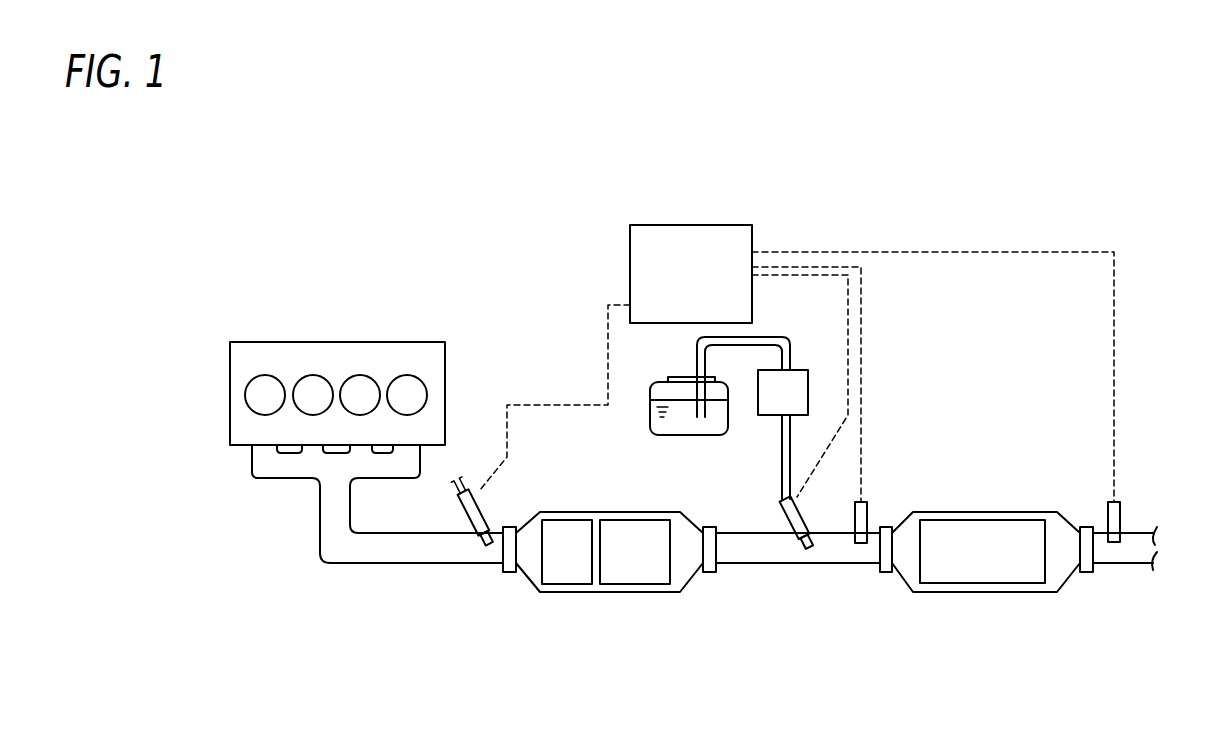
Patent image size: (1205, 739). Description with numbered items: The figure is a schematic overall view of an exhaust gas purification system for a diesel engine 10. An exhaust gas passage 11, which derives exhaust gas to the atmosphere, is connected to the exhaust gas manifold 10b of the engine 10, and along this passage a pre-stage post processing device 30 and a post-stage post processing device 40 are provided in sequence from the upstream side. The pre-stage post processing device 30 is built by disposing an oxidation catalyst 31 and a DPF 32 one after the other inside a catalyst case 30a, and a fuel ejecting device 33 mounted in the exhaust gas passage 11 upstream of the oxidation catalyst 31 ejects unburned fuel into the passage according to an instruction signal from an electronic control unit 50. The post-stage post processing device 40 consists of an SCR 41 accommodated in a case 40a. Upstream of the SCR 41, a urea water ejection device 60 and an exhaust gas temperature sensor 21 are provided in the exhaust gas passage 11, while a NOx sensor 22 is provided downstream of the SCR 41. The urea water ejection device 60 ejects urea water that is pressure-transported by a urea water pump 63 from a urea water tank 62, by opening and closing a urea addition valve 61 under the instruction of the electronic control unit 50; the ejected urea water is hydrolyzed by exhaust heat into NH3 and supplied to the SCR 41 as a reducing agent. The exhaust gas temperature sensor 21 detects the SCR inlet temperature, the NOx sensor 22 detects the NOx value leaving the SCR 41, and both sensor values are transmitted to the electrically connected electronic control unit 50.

The diesel engine 10 is at (336, 342).
The exhaust gas manifold 10b is at (285, 479).
The exhaust gas passage 11 is at (357, 565).
The fuel ejecting device 33 is at (478, 509).
The pre-stage post processing device 30 is at (609, 598).
The catalyst case 30a is at (590, 600).
The oxidation catalyst 31 is at (577, 562).
The DPF 32 is at (635, 552).
The exhaust gas temperature sensor 21 is at (856, 520).
The post-stage post processing device 40 is at (986, 598).
The case 40a is at (963, 601).
The SCR 41 is at (982, 551).
The NOx sensor 22 is at (1121, 517).
The electronic control unit 50 is at (706, 225).
The urea water ejection device 60 is at (742, 430).
The urea addition valve 61 is at (778, 522).
The urea water tank 62 is at (683, 437).
The urea water pump 63 is at (794, 405).